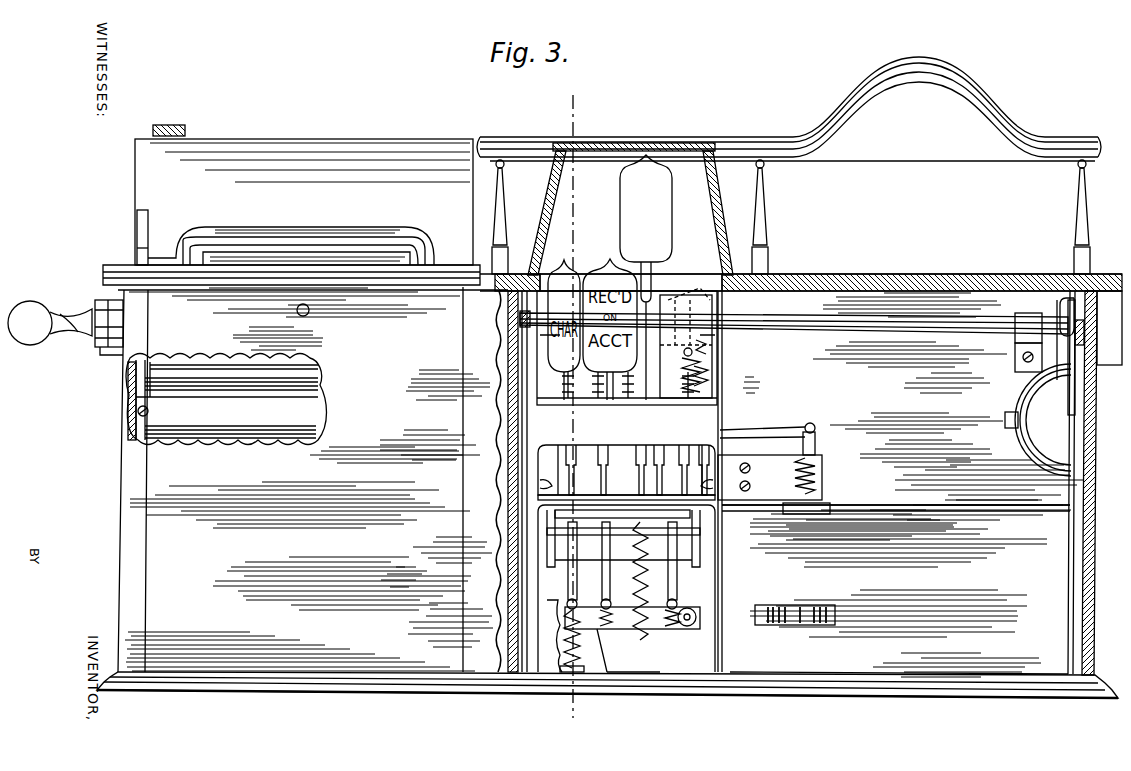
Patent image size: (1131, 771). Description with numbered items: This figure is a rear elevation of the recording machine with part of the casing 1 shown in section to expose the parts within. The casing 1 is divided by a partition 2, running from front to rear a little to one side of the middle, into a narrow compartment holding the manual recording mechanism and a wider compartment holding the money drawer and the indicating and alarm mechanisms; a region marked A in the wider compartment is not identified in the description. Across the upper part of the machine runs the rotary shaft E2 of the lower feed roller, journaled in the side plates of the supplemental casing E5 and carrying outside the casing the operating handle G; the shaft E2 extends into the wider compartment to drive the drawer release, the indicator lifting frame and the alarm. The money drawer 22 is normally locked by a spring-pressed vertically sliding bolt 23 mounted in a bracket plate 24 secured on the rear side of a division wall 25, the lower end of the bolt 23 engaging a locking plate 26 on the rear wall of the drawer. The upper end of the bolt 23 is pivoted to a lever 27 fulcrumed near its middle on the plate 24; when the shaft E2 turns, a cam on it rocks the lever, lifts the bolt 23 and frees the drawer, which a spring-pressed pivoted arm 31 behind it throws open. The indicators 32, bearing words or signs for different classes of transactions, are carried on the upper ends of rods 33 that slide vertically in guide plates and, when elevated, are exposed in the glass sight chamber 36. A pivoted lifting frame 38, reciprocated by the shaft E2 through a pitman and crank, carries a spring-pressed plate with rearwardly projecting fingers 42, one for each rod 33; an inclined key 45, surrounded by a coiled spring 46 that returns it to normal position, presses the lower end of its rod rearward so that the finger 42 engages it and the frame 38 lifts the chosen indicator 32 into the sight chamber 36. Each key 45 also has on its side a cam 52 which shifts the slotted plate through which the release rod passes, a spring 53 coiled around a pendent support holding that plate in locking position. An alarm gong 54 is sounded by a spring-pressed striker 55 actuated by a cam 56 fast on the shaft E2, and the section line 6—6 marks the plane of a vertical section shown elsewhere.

The casing 1 is at (303, 310).
The partition 2 is at (506, 426).
The section line 6— 6 is at (550, 722).
The money-drawer 22 is at (896, 589).
The bolt 23 is at (818, 448).
The bracket plate 24 is at (745, 488).
The division wall 25 is at (896, 482).
The locking plate 26 is at (832, 508).
The lever 27 is at (765, 433).
The spring-pressed pivoted arm 31 is at (742, 613).
The indicators 32 is at (628, 221).
The rods 33 is at (656, 478).
The glass sight chamber 36 is at (717, 212).
The lifting frame 38 is at (667, 548).
The fingers 42 is at (603, 533).
The keys 45 is at (705, 352).
The coiled springs 46 is at (702, 378).
The cam 52 is at (688, 330).
The spring 53 is at (282, 372).
The alarm gong 54 is at (1062, 420).
The striker 55 is at (1066, 378).
The cam 56 is at (1062, 340).
The cabinet A is at (305, 468).
The operating handle G is at (97, 298).
The rotary shaft E2 is at (782, 317).
The supplemental casing E5 is at (304, 195).